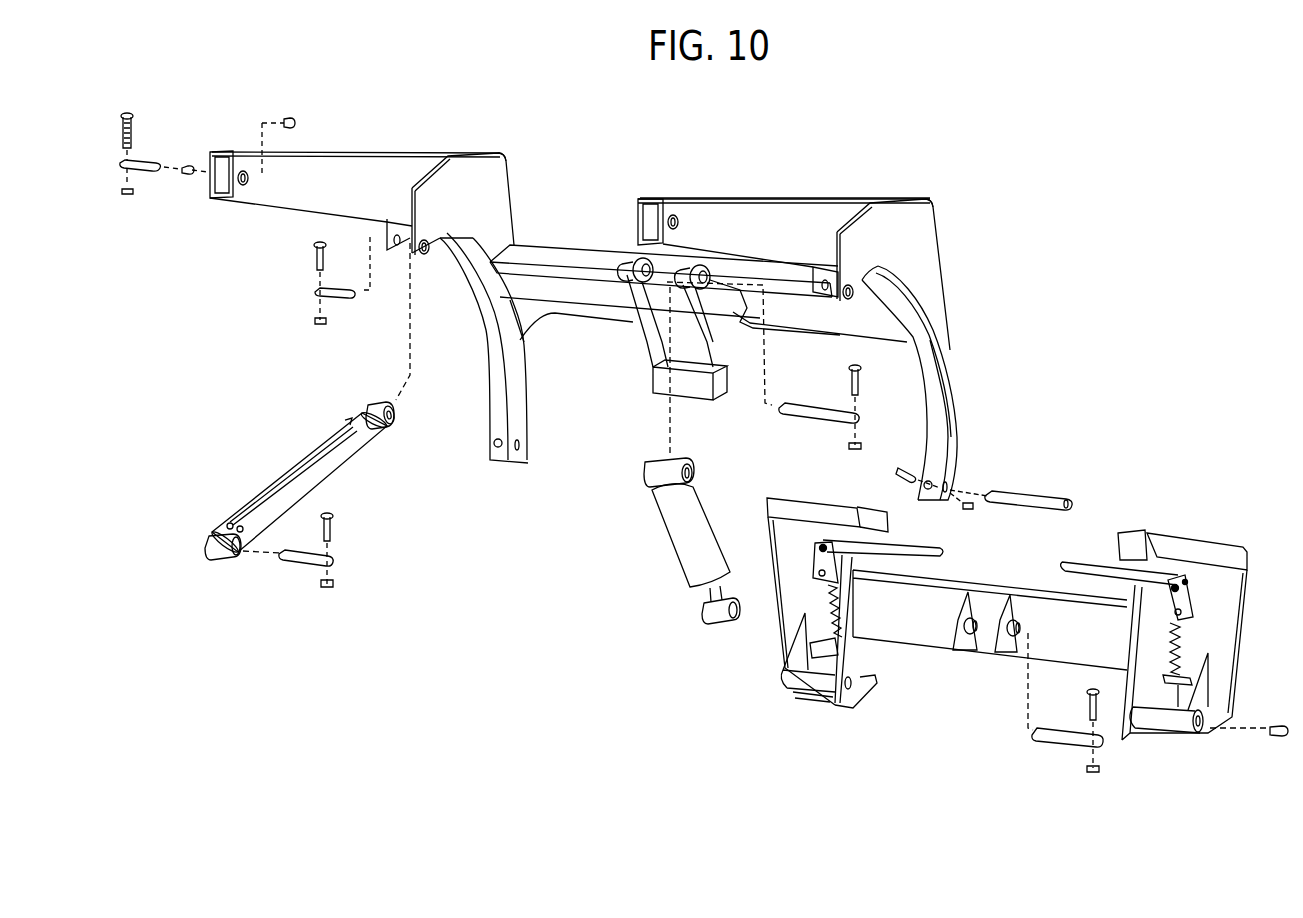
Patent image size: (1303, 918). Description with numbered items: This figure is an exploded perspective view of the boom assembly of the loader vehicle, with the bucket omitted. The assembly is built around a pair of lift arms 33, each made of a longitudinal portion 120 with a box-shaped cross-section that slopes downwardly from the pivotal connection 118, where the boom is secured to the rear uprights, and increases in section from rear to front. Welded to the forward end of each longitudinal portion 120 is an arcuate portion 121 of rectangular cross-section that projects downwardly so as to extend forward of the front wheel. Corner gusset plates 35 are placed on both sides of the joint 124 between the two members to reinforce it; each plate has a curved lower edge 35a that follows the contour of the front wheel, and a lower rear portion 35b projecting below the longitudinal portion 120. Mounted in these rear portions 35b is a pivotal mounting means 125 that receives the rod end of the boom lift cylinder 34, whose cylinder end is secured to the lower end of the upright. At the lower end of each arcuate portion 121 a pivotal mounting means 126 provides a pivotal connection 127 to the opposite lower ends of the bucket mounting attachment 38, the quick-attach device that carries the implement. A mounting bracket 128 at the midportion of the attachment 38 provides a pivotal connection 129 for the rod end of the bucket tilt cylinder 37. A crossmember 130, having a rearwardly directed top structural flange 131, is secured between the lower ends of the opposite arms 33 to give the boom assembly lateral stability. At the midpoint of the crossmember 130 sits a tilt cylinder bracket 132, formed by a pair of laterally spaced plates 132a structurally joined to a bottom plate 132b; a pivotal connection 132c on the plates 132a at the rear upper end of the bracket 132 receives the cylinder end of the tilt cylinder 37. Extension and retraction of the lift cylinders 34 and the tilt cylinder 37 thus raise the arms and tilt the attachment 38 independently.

The lift arm 33 is at (758, 197).
The boom lift cylinder 34 is at (338, 462).
The corner gusset plate 35 is at (497, 185).
The curved lower edge 35a is at (920, 310).
The lower rear portion 35b is at (387, 232).
The bucket tilt cylinder 37 is at (695, 532).
The bucket mounting attachment 38 is at (990, 575).
The pivotal connection 118 is at (243, 187).
The longitudinal portion 120 is at (372, 153).
The arcuate portion 121 is at (520, 440).
The joint 124 is at (503, 154).
The pivotal mounting means 125 is at (425, 254).
The pivotal mounting means 126 is at (968, 487).
The pivotal connection 127 is at (1205, 724).
The mounting bracket 128 is at (995, 650).
The pivotal connection 129 is at (1005, 640).
The crossmember 130 is at (594, 240).
The top structural flange 131 is at (545, 250).
The tilt cylinder bracket 132 is at (709, 329).
The laterally spaced plates 132a is at (707, 330).
The bottom plate 132b is at (660, 392).
The pivotal connection 132c is at (698, 266).